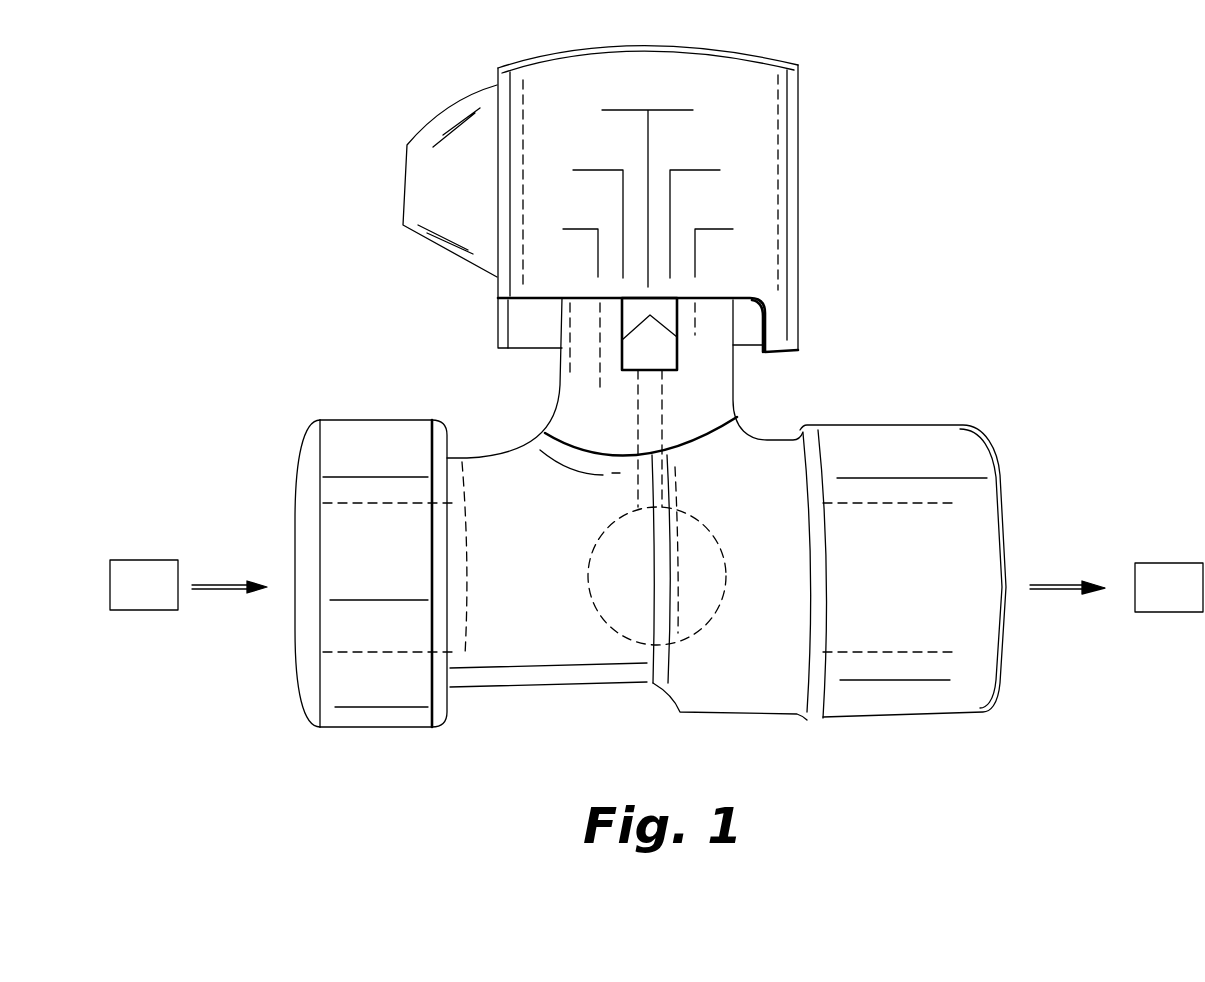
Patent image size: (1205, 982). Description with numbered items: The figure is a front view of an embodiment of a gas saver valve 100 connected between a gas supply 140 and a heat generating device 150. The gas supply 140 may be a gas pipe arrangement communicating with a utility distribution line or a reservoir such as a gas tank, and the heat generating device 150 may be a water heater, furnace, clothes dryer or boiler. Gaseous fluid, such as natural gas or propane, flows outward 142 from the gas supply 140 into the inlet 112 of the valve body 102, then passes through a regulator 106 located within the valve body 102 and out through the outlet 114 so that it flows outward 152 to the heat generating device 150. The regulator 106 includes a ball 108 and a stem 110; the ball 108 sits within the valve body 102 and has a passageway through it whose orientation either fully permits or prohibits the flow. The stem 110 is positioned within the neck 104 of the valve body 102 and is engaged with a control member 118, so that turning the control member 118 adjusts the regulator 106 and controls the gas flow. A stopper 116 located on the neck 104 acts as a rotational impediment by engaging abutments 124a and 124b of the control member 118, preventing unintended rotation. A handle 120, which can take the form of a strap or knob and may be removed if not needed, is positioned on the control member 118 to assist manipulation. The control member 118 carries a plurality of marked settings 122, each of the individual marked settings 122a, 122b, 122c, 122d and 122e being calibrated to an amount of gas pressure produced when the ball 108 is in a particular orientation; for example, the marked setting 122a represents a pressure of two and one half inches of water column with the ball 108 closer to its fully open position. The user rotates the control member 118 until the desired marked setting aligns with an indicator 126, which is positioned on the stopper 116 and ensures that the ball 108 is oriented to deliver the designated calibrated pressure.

The gas saver valve 100 is at (198, 132).
The valve body 102 is at (802, 722).
The neck 104 is at (748, 421).
The regulator 106 is at (573, 527).
The ball 108 is at (623, 637).
The stem 110 is at (662, 393).
The inlet 112 is at (367, 430).
The outlet 114 is at (903, 438).
The stopper 116 is at (663, 315).
The control member 118 is at (793, 188).
The handle 120 is at (410, 158).
The plurality of marked settings 122 is at (624, 156).
The marked setting 122a is at (565, 213).
The marked setting 122b is at (590, 138).
The marked setting 122c is at (647, 82).
The marked setting 122d is at (700, 150).
The marked setting 122e is at (723, 222).
The abutment 124a is at (497, 333).
The abutment 124b is at (760, 350).
The indicator 126 is at (638, 345).
The gas supply 140 is at (148, 560).
The gaseous fluid flowing out 142 is at (210, 583).
The heat generating device 150 is at (1173, 563).
The gaseous fluid flowing out 152 is at (1047, 588).